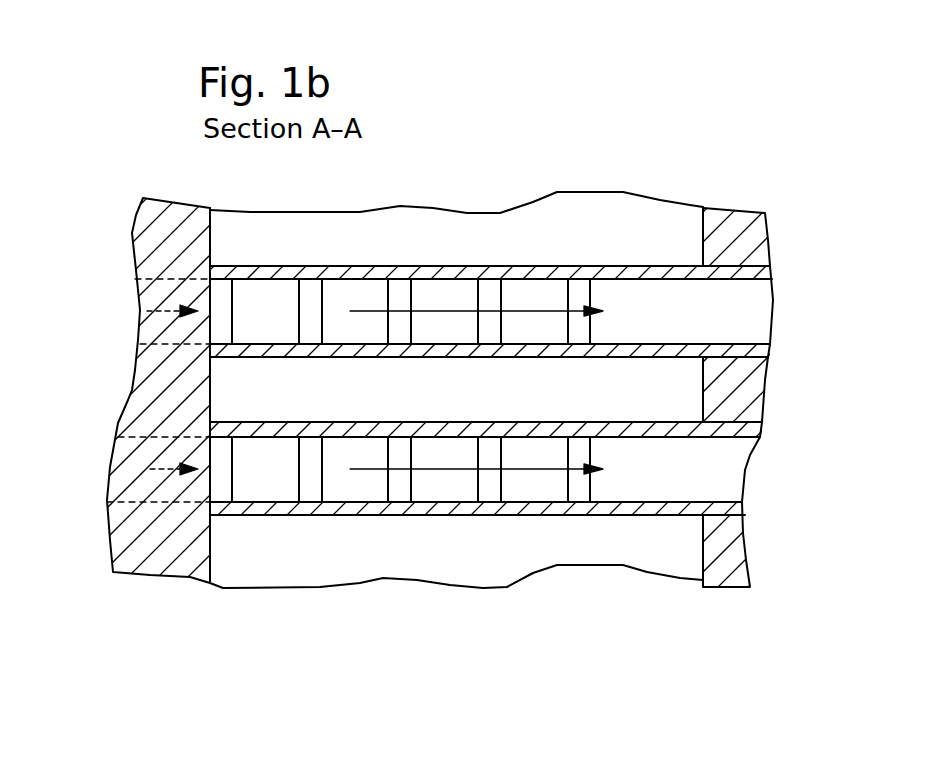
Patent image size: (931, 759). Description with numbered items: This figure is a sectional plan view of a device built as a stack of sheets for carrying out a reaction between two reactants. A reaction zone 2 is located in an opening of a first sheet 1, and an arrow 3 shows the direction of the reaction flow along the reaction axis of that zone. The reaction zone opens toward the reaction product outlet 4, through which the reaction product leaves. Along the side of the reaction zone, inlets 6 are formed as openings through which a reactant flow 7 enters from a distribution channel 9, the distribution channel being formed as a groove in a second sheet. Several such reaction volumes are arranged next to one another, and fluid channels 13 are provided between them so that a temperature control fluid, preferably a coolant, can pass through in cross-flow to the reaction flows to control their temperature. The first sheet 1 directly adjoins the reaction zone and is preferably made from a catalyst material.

The first sheet 1 is at (750, 248).
The reaction zone 2 is at (460, 292).
The arrow 3 is at (439, 308).
The reaction product outlet 4 is at (747, 312).
The inlets 6 is at (402, 298).
The reactant flow 7 is at (168, 310).
The distribution channel 9 is at (172, 292).
The fluid channels 13 is at (421, 250).